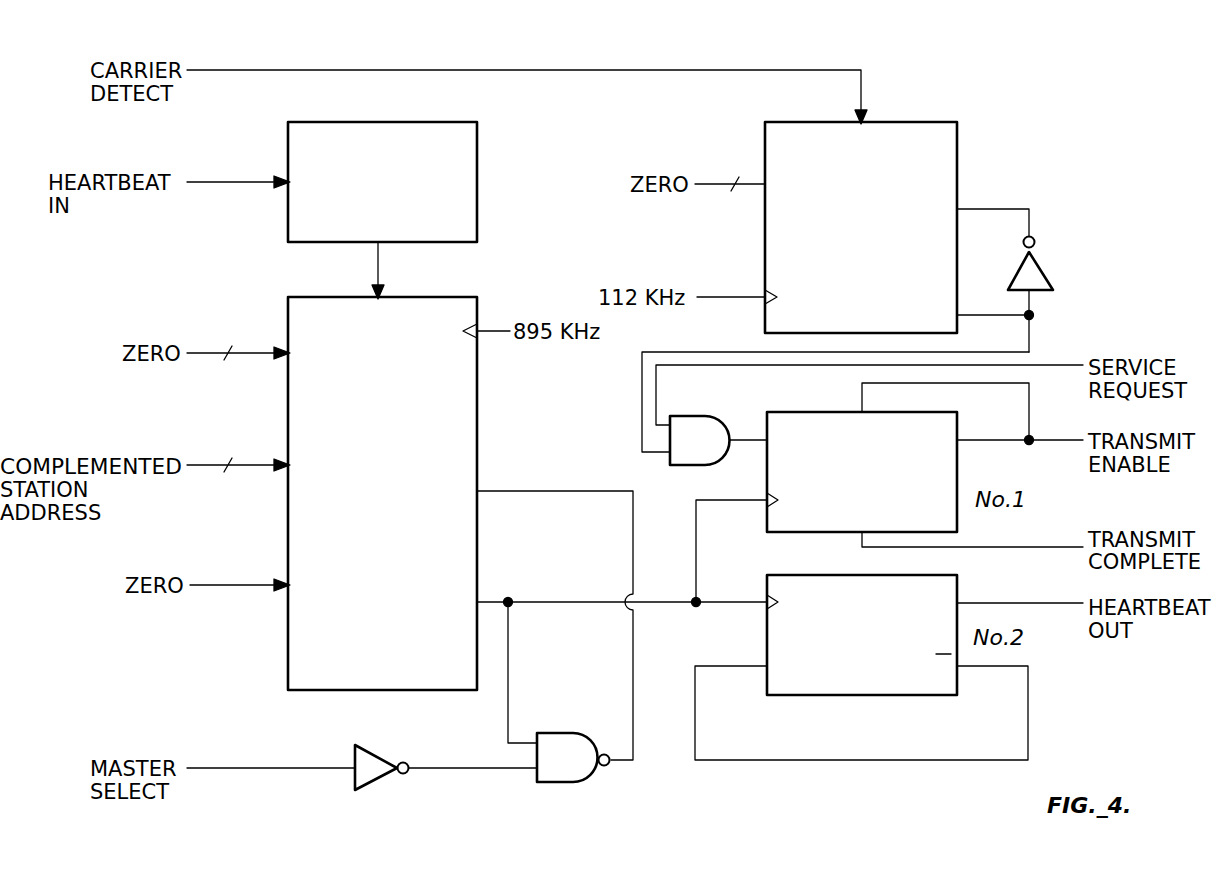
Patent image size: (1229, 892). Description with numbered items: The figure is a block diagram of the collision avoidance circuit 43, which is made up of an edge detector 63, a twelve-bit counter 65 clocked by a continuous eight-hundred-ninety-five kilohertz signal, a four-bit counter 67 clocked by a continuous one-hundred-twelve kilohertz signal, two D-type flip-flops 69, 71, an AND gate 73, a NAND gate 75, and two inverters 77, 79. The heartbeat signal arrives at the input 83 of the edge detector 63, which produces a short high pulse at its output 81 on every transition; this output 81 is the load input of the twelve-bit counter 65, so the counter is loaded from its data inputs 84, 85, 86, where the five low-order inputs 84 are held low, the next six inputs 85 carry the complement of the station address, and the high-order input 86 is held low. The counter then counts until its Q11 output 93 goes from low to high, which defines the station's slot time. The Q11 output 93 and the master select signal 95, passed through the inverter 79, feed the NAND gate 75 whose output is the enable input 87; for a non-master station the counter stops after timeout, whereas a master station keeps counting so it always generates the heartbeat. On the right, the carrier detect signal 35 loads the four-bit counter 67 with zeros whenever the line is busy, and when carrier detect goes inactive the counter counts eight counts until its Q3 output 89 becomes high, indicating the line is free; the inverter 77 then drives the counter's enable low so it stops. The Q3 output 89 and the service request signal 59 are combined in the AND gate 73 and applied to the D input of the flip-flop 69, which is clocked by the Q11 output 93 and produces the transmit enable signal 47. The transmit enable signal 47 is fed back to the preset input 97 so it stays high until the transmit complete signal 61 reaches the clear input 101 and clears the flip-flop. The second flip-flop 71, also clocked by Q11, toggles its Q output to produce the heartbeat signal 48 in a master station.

The carrier detect signal 35 is at (726, 70).
The edge detector 63 is at (458, 125).
The edge detector input 83 is at (244, 182).
The edge detector output / load input 81 is at (380, 250).
The 12-bit counter 65 is at (458, 300).
The data inputs for five low-order bits 84 is at (250, 353).
The data inputs for next six bits 85 is at (250, 465).
The high-order data bit input 86 is at (250, 585).
The enable input 87 is at (530, 491).
The Q11 output 93 is at (490, 592).
The NAND gate 75 is at (568, 738).
The master select signal 95 is at (246, 768).
The inverter 79 is at (377, 783).
The collision avoidance circuit 43 is at (668, 793).
The 4-bit counter 67 is at (925, 125).
The preset input 97 is at (990, 209).
The inverter 77 is at (1045, 275).
The Q3 output 89 is at (1008, 316).
The service request signal 59 is at (1044, 365).
The AND gate 73 is at (685, 425).
The D-type flip-flop 69 is at (790, 520).
The transmit enable signal 47 is at (1064, 440).
The clear input 101 is at (845, 548).
The transmit complete signal 61 is at (1010, 548).
The D-type flip-flop 71 is at (787, 688).
The heartbeat signal 48 is at (995, 603).